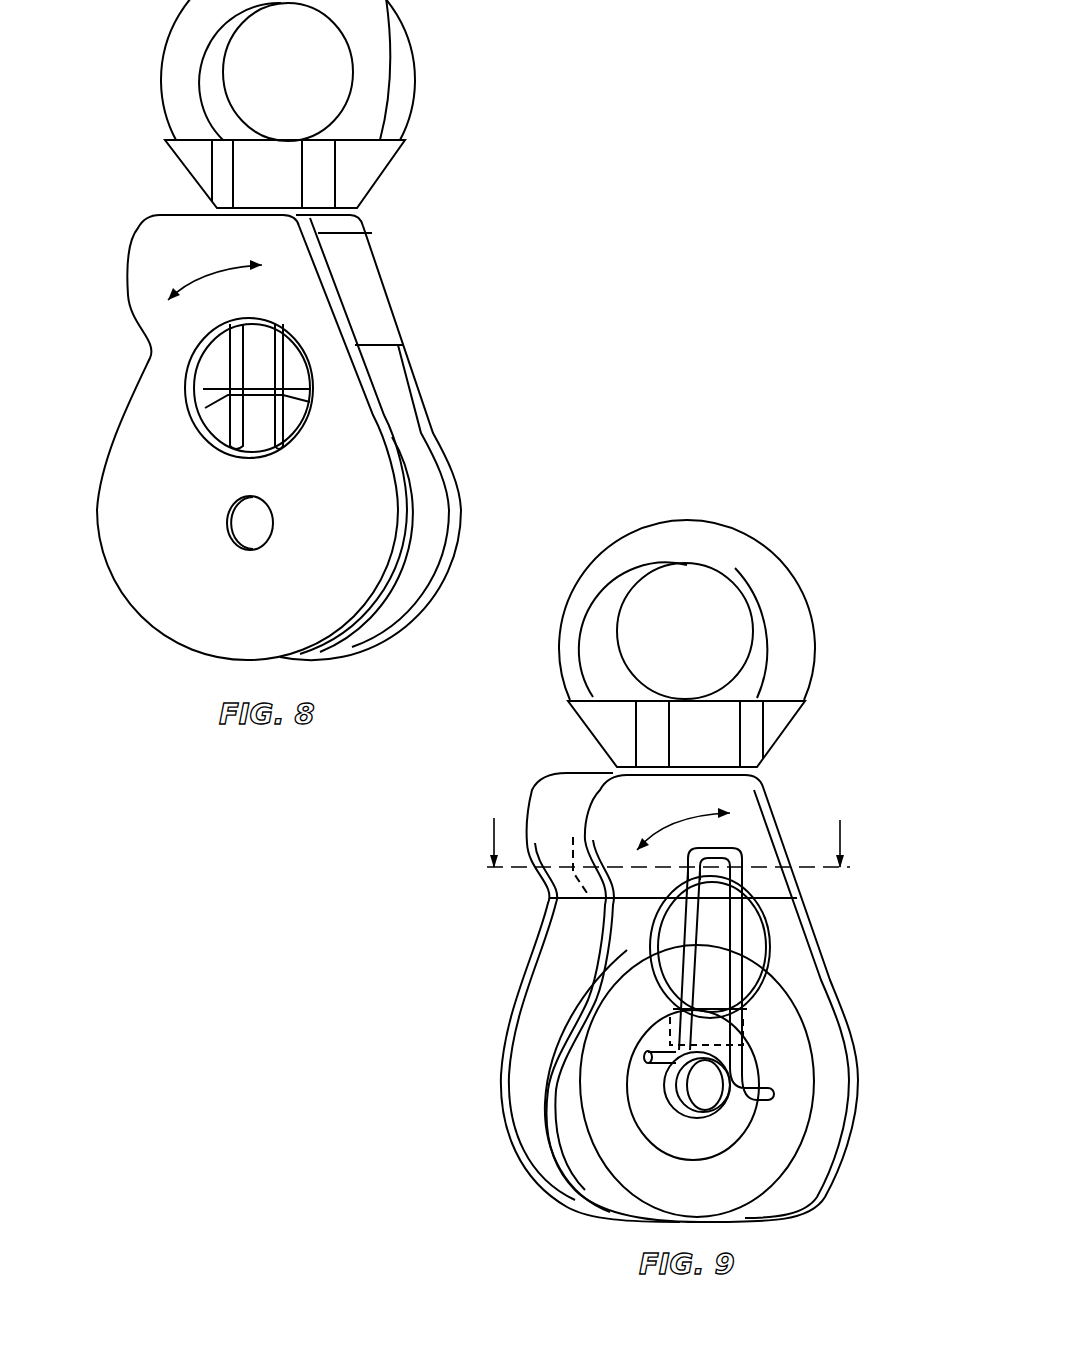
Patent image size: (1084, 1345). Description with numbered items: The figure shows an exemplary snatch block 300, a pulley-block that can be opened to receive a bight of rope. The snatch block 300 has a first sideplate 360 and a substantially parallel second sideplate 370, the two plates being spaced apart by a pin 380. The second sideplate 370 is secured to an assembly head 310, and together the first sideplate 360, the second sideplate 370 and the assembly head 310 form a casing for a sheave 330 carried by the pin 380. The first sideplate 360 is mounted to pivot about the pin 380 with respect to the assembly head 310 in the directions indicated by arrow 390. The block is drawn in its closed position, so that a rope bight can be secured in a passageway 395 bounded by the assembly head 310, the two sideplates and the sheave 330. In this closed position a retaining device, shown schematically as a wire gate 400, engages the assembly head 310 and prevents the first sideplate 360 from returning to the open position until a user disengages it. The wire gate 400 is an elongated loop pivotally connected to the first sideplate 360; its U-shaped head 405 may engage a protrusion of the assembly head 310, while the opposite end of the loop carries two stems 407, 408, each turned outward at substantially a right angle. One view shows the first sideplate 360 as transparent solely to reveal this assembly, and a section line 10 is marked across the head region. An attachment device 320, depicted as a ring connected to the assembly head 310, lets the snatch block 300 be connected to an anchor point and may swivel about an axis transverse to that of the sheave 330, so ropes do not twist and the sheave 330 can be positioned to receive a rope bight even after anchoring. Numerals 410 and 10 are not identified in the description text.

In FIG. 8, the snatch block 300 is at (520, 306).
In FIG. 9, the snatch block 300 is at (830, 765).
In FIG. 8, the assembly head 310 is at (363, 288).
In FIG. 9, the assembly head 310 is at (565, 818).
In FIG. 8, the attachment device 320 is at (378, 62).
In FIG. 9, the attachment device 320 is at (770, 593).
In FIG. 8, the sheave 330 is at (413, 507).
In FIG. 9, the sheave 330 is at (552, 1052).
In FIG. 8, the first sideplate 360 is at (142, 475).
In FIG. 8, the second sideplate 370 is at (447, 455).
In FIG. 8, the pin 380 is at (253, 518).
In FIG. 9, the pin 380 is at (703, 1093).
In FIG. 8, the arrow 390 is at (215, 272).
In FIG. 9, the arrow 390 is at (683, 822).
In FIG. 8, the passageway 395 is at (388, 400).
In FIG. 9, the passageway 395 is at (597, 937).
In FIG. 8, the wire gate 400 is at (233, 382).
In FIG. 9, the wire gate 400 is at (740, 933).
In FIG. 9, the U-shaped head 405 is at (746, 870).
In FIG. 9, the stem 407 is at (645, 1057).
In FIG. 9, the stem 408 is at (777, 1098).
In FIG. 8, the bushing 410 is at (310, 372).
In FIG. 9, the section line 10 is at (671, 843).